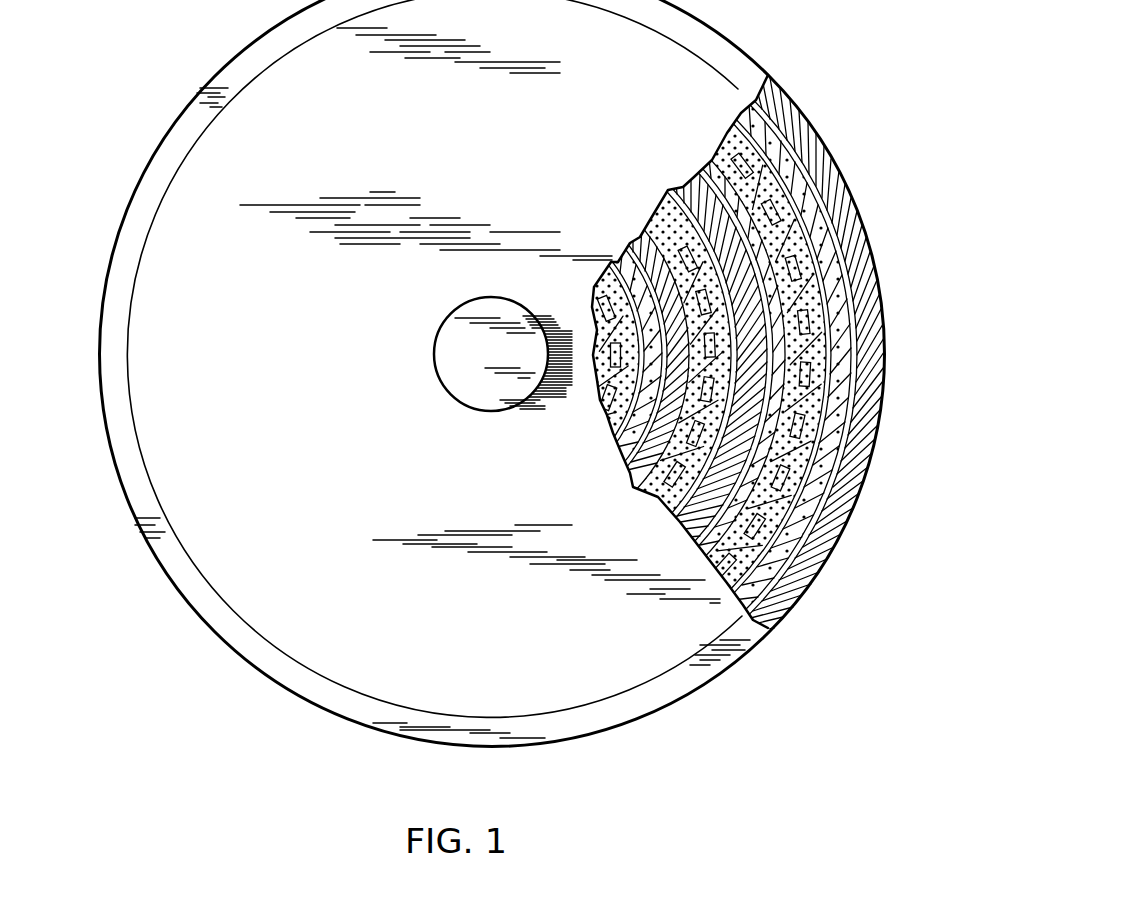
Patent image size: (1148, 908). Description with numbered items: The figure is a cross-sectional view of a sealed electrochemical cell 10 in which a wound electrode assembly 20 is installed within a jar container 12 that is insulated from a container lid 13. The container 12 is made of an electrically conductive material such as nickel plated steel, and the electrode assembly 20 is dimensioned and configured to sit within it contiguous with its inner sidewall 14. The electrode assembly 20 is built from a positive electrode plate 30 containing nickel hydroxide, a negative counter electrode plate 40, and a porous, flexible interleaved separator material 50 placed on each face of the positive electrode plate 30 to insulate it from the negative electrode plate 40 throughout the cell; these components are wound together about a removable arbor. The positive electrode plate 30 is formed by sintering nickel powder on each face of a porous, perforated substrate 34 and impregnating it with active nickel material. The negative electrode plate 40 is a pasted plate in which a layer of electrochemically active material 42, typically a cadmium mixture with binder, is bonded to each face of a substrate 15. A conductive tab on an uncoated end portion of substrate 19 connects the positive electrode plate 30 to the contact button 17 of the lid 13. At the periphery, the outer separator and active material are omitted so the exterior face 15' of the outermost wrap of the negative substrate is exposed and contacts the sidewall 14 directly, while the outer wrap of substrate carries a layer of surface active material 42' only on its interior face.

The sealed electrochemical cell 10 is at (768, 58).
The jar container 12 is at (830, 164).
The container lid 13 is at (310, 453).
The inner sidewall 14 is at (852, 285).
The substrate 15 is at (632, 354).
The exterior face of substrate 15' is at (786, 354).
The contact button 17 is at (478, 308).
The substrate 19 is at (603, 398).
The wound electrode assembly 20 is at (681, 526).
The positive electrode plate 30 is at (782, 247).
The porous substrate 34 is at (812, 322).
The negative counter electrode plate 40 is at (631, 480).
The electrochemically active material 42 is at (654, 234).
The layer of surface active material 42' is at (818, 545).
The separator material 50 is at (737, 120).